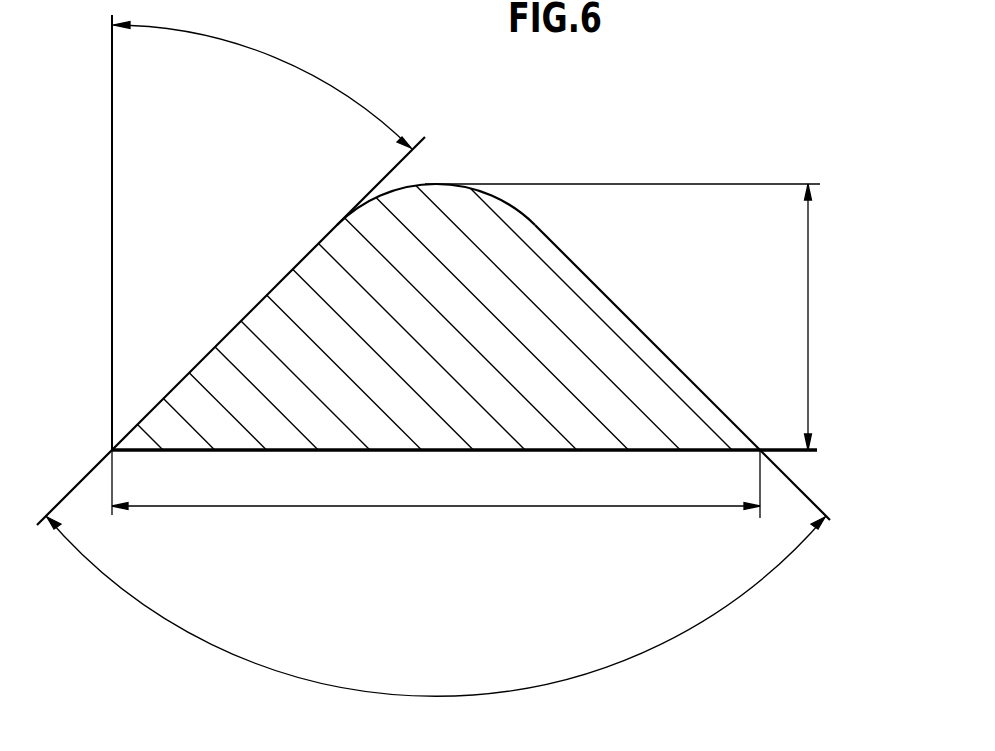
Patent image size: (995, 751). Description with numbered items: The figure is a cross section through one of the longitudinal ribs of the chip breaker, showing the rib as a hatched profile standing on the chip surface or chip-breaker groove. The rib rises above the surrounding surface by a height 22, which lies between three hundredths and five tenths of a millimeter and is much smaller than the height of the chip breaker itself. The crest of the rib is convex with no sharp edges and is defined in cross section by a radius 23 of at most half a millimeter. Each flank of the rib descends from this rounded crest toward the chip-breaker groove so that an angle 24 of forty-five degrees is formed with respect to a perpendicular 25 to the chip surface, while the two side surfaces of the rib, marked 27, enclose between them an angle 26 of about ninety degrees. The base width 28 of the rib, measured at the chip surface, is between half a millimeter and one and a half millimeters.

The height 22 is at (634, 317).
The radius 23 is at (445, 213).
The angle 24 is at (275, 60).
The perpendicular 25 is at (112, 260).
The angle 26 is at (436, 606).
The flanks of profile 27 is at (222, 367).
The base width of profile 28 is at (464, 484).